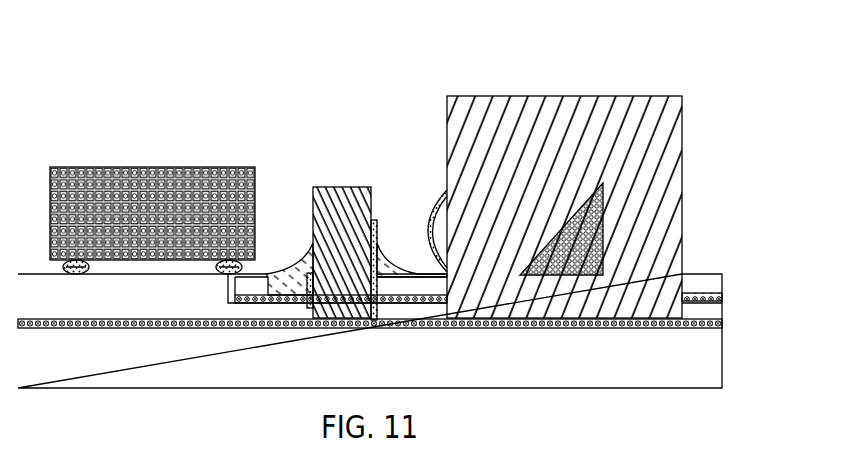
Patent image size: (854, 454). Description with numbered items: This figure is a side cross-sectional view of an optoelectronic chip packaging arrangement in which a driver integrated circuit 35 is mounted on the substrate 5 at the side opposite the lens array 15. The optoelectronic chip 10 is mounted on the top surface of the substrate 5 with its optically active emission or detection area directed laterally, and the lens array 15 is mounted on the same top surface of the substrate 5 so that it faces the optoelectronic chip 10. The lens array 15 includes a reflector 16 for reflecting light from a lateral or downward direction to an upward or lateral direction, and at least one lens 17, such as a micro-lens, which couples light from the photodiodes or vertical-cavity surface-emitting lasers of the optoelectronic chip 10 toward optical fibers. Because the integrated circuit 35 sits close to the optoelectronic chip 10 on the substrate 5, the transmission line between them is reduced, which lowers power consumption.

The substrate 5 is at (692, 368).
The integrated circuit 35 is at (138, 182).
The optoelectronic chip 10 is at (348, 196).
The lens array 15 is at (526, 125).
The reflector 16 is at (561, 229).
The lens 17 is at (442, 192).